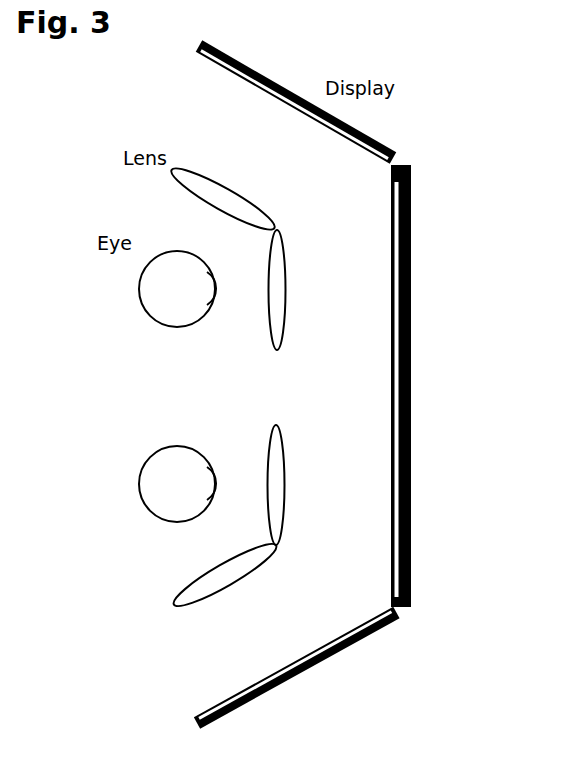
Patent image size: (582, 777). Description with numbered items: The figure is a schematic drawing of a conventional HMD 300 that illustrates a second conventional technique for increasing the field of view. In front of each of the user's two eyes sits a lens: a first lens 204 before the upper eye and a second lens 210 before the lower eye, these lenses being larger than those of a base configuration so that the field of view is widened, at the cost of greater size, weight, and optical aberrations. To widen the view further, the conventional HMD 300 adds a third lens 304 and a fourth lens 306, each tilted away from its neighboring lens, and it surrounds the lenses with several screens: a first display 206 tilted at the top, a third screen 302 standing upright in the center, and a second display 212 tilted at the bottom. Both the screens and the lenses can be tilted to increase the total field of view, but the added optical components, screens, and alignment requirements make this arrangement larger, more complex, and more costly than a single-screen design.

The conventional HMD 300 is at (503, 128).
The first display 206 is at (275, 82).
The third screen 302 is at (411, 378).
The second display 212 is at (327, 662).
The first lens 204 is at (285, 308).
The third lens 304 is at (227, 200).
The second lens 210 is at (285, 472).
The fourth lens 306 is at (228, 575).